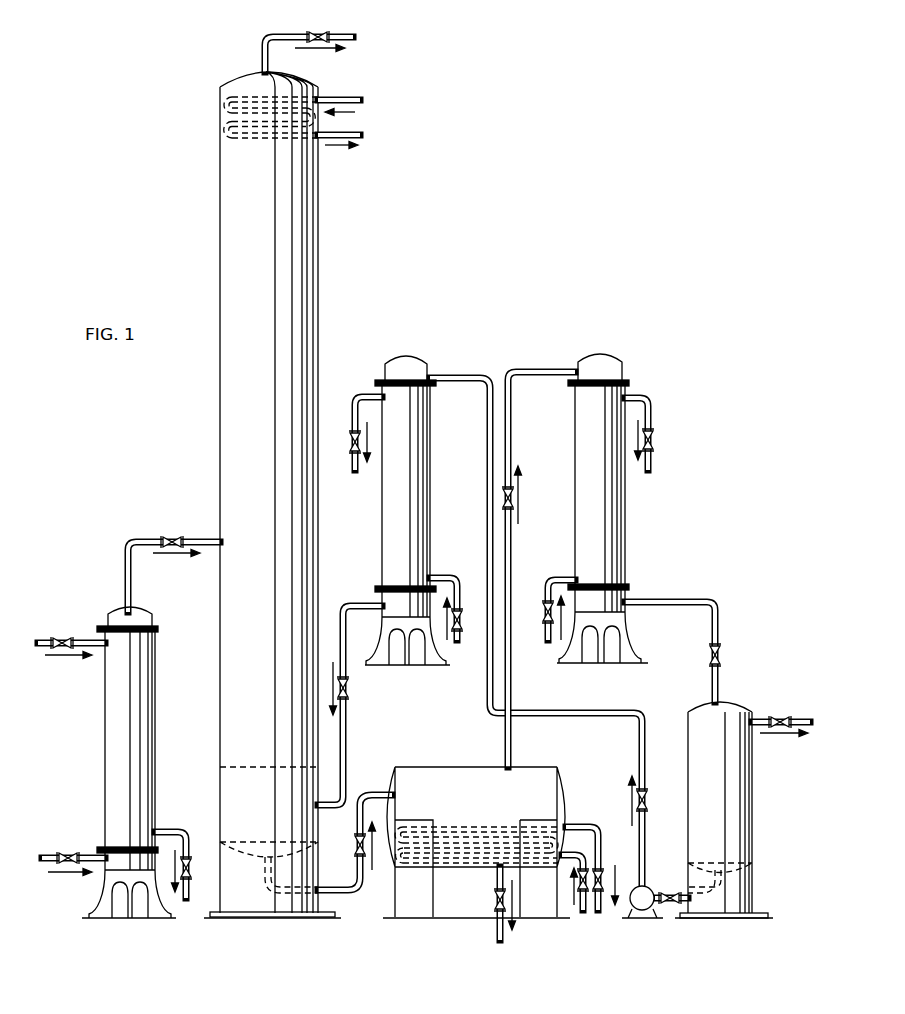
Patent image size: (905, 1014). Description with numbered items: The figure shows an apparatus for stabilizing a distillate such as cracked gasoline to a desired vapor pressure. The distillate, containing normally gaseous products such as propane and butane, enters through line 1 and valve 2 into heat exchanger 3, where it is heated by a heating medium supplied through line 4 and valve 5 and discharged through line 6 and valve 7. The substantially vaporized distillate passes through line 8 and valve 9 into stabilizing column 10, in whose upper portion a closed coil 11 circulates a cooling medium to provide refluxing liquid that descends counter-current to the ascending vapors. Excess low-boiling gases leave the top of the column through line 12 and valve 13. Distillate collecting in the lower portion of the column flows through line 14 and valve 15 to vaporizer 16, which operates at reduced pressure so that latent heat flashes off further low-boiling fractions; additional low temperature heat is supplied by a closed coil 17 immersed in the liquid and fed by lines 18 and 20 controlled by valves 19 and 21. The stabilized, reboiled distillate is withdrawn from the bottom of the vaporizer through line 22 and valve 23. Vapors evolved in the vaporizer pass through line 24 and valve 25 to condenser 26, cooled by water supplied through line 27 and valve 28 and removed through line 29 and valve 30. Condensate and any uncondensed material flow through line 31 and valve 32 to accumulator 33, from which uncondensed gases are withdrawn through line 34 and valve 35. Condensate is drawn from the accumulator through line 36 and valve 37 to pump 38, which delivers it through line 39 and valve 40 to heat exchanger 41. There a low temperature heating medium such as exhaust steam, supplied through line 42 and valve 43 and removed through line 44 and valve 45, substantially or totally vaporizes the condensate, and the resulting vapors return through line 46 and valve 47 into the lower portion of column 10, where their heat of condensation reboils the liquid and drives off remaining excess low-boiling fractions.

The line 1 is at (47, 866).
The valve 2 is at (70, 851).
The heat exchanger 3 is at (117, 534).
The line 4 is at (50, 652).
The valve 5 is at (67, 637).
The line 6 is at (184, 834).
The valve 7 is at (193, 864).
The line 8 is at (132, 583).
The valve 9 is at (176, 536).
The stabilizing column 10 is at (367, 170).
The closed coil 11 is at (228, 124).
The line 12 is at (278, 35).
The valve 13 is at (320, 32).
The line 14 is at (338, 888).
The valve 15 is at (355, 843).
The vaporizer 16 is at (470, 748).
The closed coil 17 is at (463, 860).
The line 18 is at (581, 906).
The valve 19 is at (578, 883).
The line 20 is at (592, 825).
The valve 21 is at (608, 875).
The line 22 is at (495, 880).
The valve 23 is at (495, 899).
The line 24 is at (512, 746).
The valve 25 is at (513, 497).
The condenser 26 is at (633, 321).
The line 27 is at (548, 627).
The valve 28 is at (549, 608).
The line 29 is at (655, 416).
The valve 30 is at (655, 440).
The line 31 is at (647, 601).
The valve 32 is at (723, 656).
The accumulator 33 is at (680, 694).
The line 34 is at (758, 727).
The valve 35 is at (786, 716).
The line 36 is at (705, 904).
The valve 37 is at (670, 905).
The pump 38 is at (649, 894).
The line 39 is at (488, 400).
The valve 40 is at (647, 799).
The heat exchanger 41 is at (450, 319).
The line 42 is at (459, 634).
The valve 43 is at (462, 593).
The line 44 is at (353, 407).
The valve 45 is at (352, 445).
The line 46 is at (352, 600).
The valve 47 is at (351, 688).